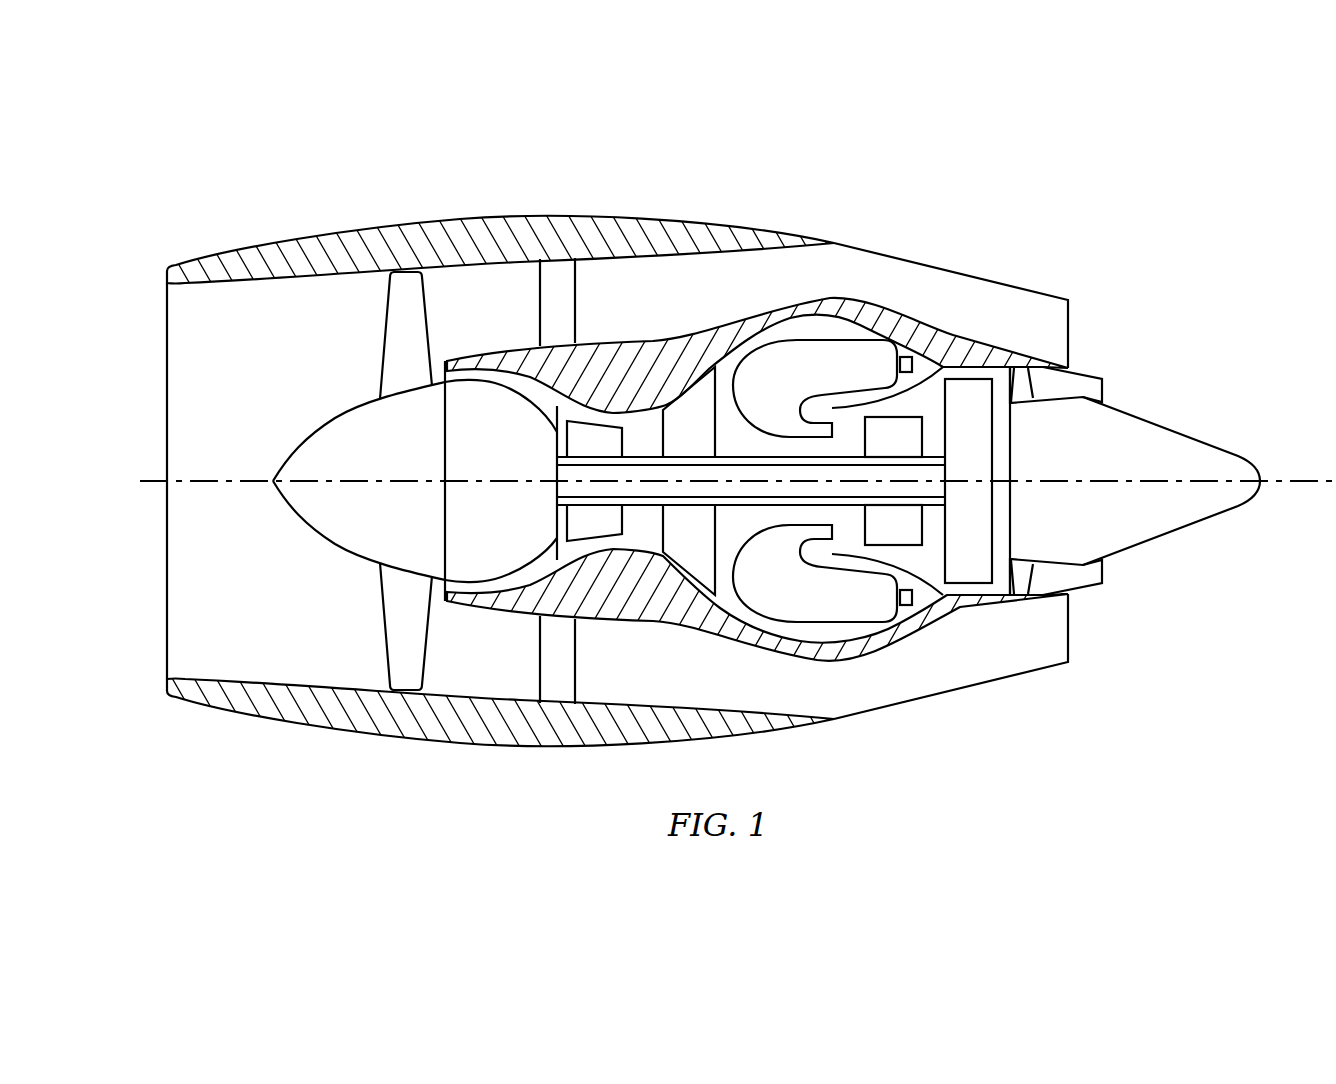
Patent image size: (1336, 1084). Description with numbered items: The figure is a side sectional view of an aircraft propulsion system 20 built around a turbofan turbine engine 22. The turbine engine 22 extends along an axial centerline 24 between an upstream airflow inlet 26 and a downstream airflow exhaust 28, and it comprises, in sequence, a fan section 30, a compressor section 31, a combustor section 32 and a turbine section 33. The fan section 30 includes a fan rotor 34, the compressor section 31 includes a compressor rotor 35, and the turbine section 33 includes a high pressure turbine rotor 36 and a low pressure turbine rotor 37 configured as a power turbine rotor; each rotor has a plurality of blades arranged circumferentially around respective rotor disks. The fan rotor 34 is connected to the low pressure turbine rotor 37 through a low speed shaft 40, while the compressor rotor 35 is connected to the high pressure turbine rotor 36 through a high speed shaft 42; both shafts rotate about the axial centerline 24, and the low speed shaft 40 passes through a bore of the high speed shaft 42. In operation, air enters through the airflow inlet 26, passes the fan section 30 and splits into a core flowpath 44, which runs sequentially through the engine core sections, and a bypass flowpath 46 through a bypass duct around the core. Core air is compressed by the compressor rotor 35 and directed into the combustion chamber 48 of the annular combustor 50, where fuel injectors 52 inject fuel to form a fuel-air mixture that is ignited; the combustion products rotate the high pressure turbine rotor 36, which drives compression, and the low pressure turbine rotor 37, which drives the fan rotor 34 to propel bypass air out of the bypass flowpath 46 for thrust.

The aircraft propulsion system 20 is at (985, 230).
The turbofan turbine engine 22 is at (250, 627).
The axial centerline 24 is at (1302, 468).
The upstream airflow inlet 26 is at (167, 352).
The downstream airflow exhaust 28 is at (1105, 389).
The fan section 30 is at (335, 325).
The compressor section 31 is at (640, 432).
The combustor section 32 is at (812, 335).
The turbine section 33 is at (930, 403).
The fan rotor 34 is at (327, 545).
The compressor rotor 35 is at (678, 567).
The high pressure turbine (HPT) rotor 36 is at (925, 530).
The low pressure turbine (LPT) rotor 37 is at (994, 496).
The low speed shaft 40 is at (565, 491).
The high speed shaft 42 is at (733, 443).
The core flowpath 44 is at (1055, 386).
The bypass flowpath 46 is at (1025, 330).
The combustion chamber 48 is at (848, 623).
The combustor 50 is at (800, 641).
The fuel injectors 52 is at (906, 354).